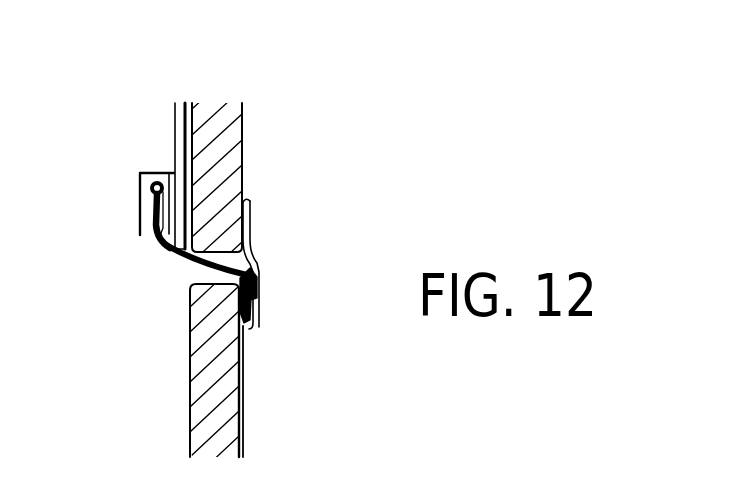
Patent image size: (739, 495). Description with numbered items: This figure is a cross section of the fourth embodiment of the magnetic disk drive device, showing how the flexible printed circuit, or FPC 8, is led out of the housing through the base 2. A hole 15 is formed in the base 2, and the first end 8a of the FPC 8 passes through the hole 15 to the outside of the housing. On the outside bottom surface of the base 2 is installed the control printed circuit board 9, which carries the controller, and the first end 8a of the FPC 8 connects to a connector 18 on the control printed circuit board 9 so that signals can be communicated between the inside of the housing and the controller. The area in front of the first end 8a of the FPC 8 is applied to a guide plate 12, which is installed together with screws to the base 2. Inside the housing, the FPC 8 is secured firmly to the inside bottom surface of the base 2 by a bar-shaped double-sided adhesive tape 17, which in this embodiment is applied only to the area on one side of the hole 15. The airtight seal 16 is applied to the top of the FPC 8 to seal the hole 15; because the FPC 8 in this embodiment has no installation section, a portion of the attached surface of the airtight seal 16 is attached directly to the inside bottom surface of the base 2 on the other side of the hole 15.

The base 2 is at (190, 383).
The FPC 8 is at (244, 357).
The first end of the FPC 8a is at (152, 233).
The control printed circuit board 9 is at (177, 124).
The guide plate 12 is at (236, 141).
The hole 15 is at (197, 273).
The airtight seal 16 is at (248, 250).
The double-sided adhesive tape 17 is at (257, 295).
The connector 18 is at (140, 175).